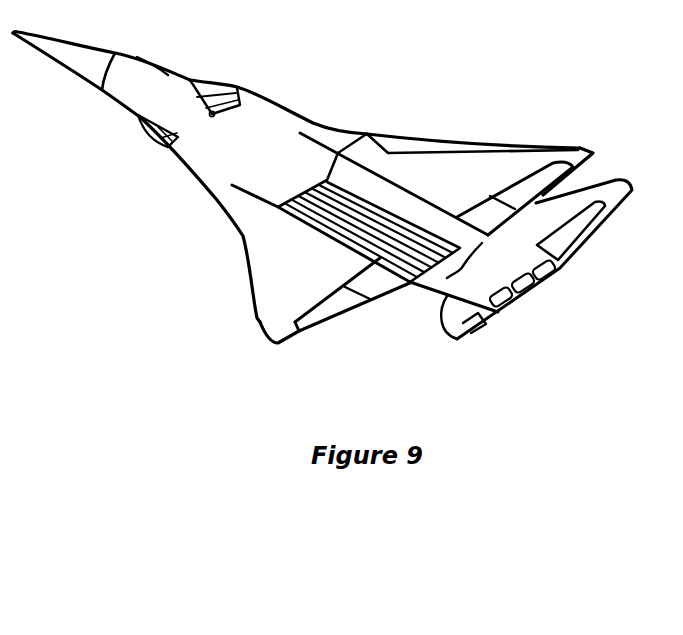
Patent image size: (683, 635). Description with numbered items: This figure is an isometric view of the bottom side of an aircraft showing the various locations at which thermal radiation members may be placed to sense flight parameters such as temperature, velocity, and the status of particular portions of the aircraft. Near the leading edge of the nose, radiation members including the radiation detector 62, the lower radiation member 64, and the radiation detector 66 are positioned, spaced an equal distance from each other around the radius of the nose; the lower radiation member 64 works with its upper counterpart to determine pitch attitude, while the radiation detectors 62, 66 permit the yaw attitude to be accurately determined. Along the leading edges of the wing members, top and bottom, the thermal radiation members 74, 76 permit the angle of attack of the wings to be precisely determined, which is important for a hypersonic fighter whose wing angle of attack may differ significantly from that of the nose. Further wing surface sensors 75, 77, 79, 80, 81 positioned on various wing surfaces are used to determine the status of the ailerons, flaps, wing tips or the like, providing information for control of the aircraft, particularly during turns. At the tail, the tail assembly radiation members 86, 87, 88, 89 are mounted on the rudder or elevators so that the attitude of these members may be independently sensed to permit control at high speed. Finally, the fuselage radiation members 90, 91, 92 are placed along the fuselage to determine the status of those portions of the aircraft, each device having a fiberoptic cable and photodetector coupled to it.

The radiation detector 62 is at (115, 53).
The lower radiation member 64 is at (118, 80).
The radiation detector 66 is at (102, 90).
The thermal radiation member 74 is at (409, 143).
The wing surface sensor 75 is at (243, 236).
The thermal radiation member 76 is at (577, 148).
The wing surface sensor 77 is at (260, 322).
The wing surface sensor 79 is at (332, 313).
The wing surface sensor 80 is at (495, 211).
The wing surface sensor 81 is at (377, 290).
The tail assembly radiation member 86 is at (621, 190).
The tail assembly radiation member 87 is at (566, 249).
The tail assembly radiation member 88 is at (455, 338).
The tail assembly radiation member 89 is at (482, 323).
The fuselage radiation member 90 is at (214, 80).
The fuselage radiation member 91 is at (162, 148).
The fuselage radiation member 92 is at (214, 117).